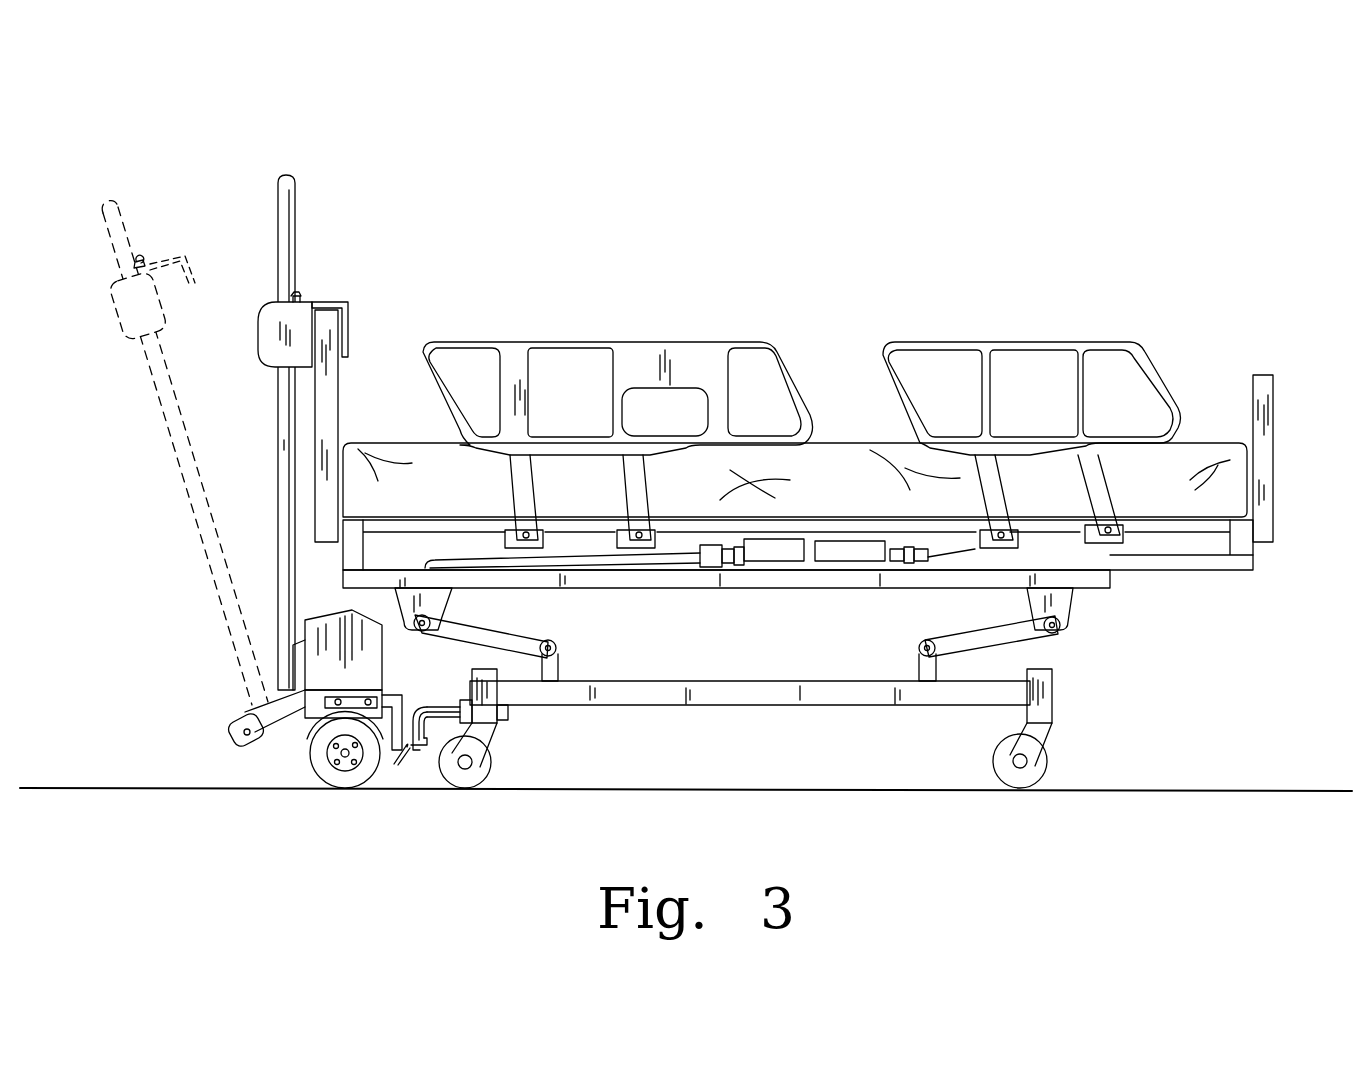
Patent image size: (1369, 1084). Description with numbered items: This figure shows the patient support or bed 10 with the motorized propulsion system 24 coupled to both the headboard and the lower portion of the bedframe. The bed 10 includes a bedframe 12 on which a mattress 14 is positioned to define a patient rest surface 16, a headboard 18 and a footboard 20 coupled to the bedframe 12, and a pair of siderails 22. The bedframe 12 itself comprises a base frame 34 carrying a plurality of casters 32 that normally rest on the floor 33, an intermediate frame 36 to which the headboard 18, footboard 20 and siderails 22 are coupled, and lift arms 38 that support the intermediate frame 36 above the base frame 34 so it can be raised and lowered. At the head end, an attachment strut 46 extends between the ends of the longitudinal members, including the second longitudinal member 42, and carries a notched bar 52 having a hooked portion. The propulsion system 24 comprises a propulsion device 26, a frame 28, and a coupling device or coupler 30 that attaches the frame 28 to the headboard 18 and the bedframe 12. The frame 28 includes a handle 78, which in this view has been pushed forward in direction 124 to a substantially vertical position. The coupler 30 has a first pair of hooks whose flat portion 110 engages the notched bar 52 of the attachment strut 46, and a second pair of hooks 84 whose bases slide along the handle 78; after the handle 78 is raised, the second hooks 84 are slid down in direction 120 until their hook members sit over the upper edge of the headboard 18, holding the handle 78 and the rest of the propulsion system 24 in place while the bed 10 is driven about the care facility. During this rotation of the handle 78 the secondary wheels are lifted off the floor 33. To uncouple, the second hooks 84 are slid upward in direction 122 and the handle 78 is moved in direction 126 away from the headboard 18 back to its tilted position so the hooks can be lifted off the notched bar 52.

The patient support or bed 10 is at (950, 263).
The bedframe 12 is at (1140, 648).
The mattress 14 is at (835, 440).
The patient rest surface 16 is at (410, 441).
The headboard 18 is at (352, 352).
The footboard 20 is at (1258, 352).
The siderails 22 is at (632, 318).
The propulsion system 24 is at (308, 160).
The propulsion device 26 is at (345, 812).
The frame 28 is at (238, 698).
The coupling device or coupler 30 is at (340, 275).
The casters 32 is at (505, 772).
The floor 33 is at (148, 786).
The base frame 34 is at (742, 706).
The intermediate frame 36 is at (790, 590).
The lift arms 38 is at (505, 630).
The second longitudinal member 42 is at (642, 681).
The attachment strut 46 is at (440, 690).
The notched bar 52 is at (425, 755).
The handle 78 is at (283, 445).
The second pair of hooks 84 is at (255, 362).
The flat portion 110 is at (398, 757).
The direction 120 is at (252, 286).
The direction 122 is at (350, 166).
The direction 124 is at (210, 185).
The direction 126 is at (112, 150).